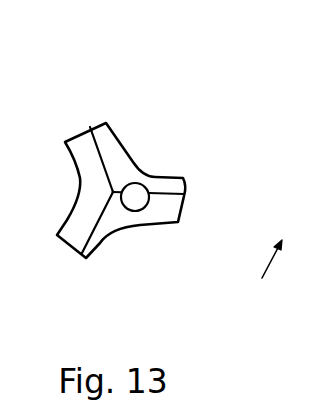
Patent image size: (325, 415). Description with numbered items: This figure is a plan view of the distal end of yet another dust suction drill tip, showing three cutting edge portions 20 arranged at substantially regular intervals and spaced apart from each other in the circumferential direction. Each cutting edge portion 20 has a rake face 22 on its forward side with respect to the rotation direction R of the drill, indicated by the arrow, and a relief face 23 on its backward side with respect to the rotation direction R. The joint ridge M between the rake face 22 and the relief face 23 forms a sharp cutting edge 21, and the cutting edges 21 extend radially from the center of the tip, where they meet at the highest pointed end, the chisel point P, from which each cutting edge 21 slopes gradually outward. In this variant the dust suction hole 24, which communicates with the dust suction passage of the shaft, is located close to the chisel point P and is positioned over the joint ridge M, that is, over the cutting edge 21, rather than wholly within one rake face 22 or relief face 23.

The cutting edge portion 20 is at (97, 52).
The rake face 22 is at (83, 142).
The relief face 23 is at (100, 134).
The dust suction hole 24 is at (135, 192).
The cutting edge 21 is at (162, 194).
The chisel point P is at (113, 188).
The rotation direction R is at (286, 254).